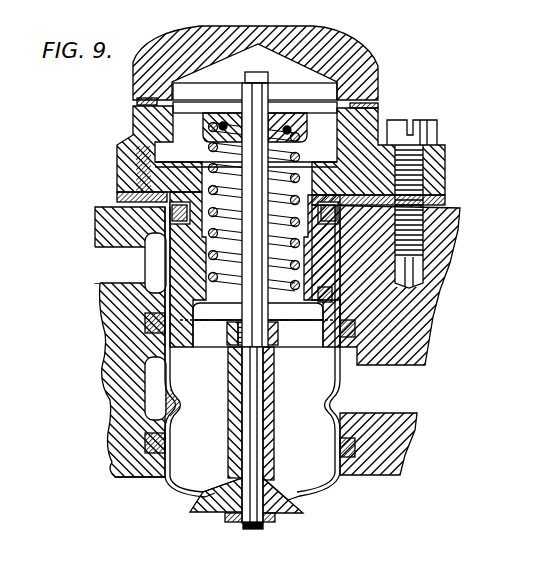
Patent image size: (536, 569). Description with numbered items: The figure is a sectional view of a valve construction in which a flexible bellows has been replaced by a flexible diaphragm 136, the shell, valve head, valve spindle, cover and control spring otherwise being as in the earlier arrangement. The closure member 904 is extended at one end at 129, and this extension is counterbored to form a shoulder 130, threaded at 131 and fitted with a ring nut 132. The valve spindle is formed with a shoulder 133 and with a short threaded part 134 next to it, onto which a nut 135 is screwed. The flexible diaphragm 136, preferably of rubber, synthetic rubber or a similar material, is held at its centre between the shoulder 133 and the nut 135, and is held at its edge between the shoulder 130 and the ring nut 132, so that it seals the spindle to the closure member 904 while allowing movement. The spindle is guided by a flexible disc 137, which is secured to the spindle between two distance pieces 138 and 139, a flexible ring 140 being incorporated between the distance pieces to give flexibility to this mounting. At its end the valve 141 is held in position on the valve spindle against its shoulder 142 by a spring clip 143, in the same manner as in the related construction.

The set screw 904 is at (370, 137).
The flexible diaphragm 136 is at (96, 238).
The shoulder 130 is at (96, 263).
The ring nut 132 is at (145, 316).
The threaded part 131 is at (165, 330).
The extension 129 is at (170, 326).
The nut 135 is at (232, 350).
The distance piece 138 is at (166, 392).
The flexible disc 137 is at (146, 446).
The flexible ring 140 is at (180, 488).
The distance piece 139 is at (165, 478).
The shoulder 142 is at (200, 493).
The valve 141 is at (210, 507).
The spring clip 143 is at (232, 521).
The shoulder 133 is at (292, 348).
The threaded part 134 is at (300, 372).